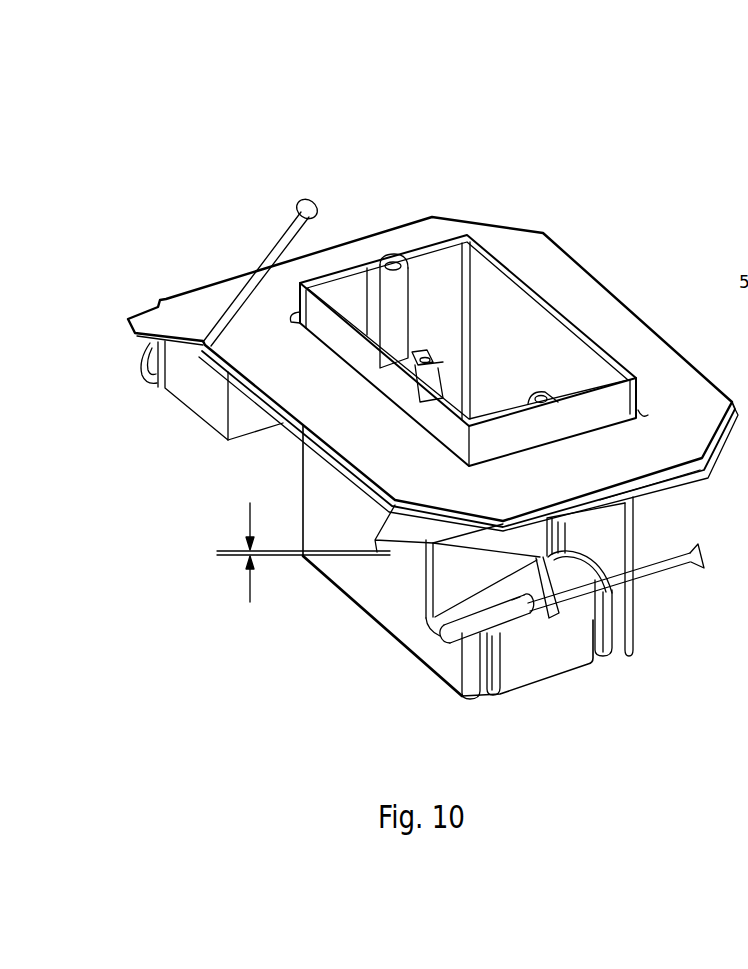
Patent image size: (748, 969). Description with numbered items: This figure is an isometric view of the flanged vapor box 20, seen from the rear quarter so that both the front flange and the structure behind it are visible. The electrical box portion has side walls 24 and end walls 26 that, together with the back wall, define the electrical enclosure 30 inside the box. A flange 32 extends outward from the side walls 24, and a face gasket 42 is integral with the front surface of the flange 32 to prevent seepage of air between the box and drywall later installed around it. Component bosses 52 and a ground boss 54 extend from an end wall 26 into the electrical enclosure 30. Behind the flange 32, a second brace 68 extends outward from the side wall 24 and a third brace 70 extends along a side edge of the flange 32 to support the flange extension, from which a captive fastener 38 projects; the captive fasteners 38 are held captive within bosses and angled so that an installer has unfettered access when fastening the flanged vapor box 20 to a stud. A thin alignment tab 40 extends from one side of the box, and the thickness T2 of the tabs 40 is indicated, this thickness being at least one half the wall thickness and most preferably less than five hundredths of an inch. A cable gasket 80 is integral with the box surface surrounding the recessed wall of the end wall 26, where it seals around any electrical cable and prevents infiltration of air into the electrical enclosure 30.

The flanged vapor box 20 is at (204, 175).
The side walls 24 is at (448, 560).
The end walls 26 is at (590, 576).
The electrical enclosure 30 is at (552, 342).
The flange 32 is at (677, 483).
The captive fasteners 38 is at (665, 574).
The alignment tabs 40 is at (420, 548).
The face gasket 42 is at (433, 374).
The component bosses 52 is at (393, 260).
The ground boss 54 is at (430, 358).
The second brace 68 is at (243, 427).
The third brace 70 is at (184, 390).
The cable gasket 80 is at (569, 624).
The thickness of the tabs T2 is at (303, 542).